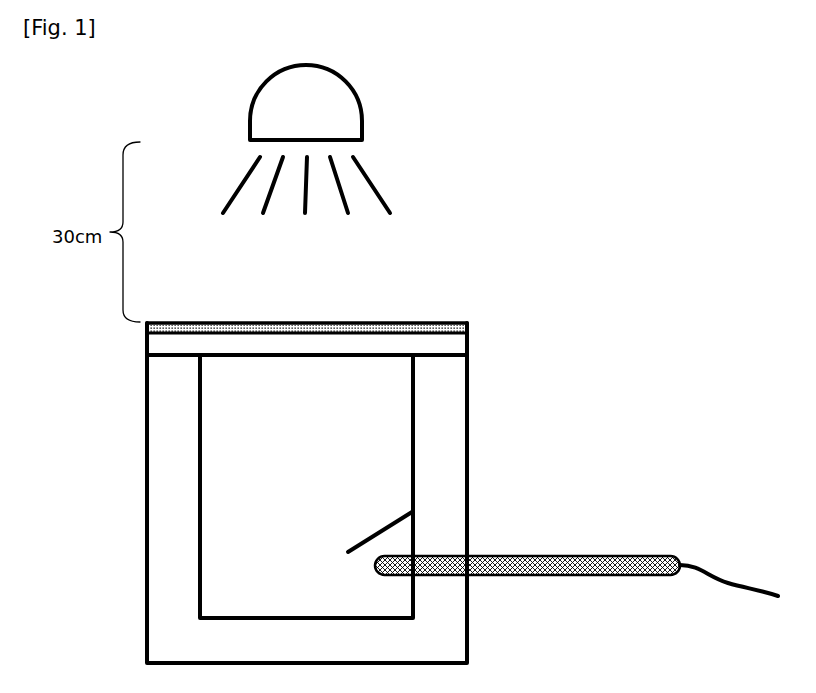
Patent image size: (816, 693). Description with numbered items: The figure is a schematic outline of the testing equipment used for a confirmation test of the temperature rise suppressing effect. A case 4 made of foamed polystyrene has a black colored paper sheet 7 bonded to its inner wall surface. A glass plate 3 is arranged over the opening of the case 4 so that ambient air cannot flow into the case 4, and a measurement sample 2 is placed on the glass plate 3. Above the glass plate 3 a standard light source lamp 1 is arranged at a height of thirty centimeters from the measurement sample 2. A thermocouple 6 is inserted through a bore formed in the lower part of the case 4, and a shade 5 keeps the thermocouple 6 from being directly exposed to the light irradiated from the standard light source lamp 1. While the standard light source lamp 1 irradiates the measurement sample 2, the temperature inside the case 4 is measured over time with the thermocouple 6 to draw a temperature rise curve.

The standard light source lamp 1 is at (363, 107).
The measurement sample 2 is at (467, 323).
The glass plate 3 is at (467, 345).
The case 4 is at (443, 410).
The shade 5 is at (393, 530).
The thermocouple 6 is at (563, 575).
The black colored paper sheet 7 is at (201, 422).